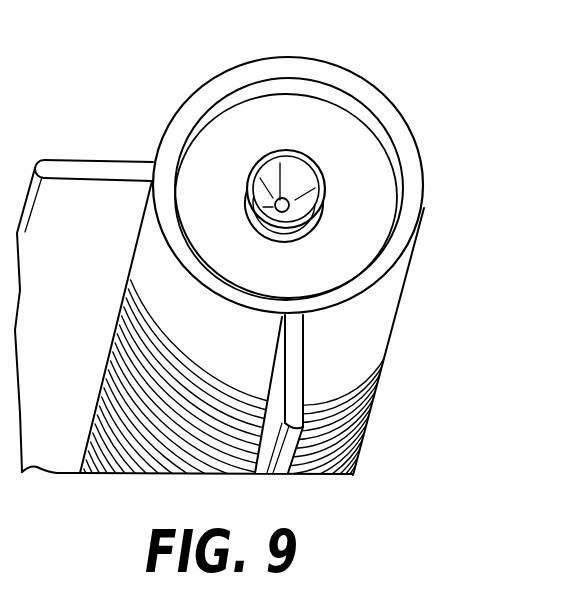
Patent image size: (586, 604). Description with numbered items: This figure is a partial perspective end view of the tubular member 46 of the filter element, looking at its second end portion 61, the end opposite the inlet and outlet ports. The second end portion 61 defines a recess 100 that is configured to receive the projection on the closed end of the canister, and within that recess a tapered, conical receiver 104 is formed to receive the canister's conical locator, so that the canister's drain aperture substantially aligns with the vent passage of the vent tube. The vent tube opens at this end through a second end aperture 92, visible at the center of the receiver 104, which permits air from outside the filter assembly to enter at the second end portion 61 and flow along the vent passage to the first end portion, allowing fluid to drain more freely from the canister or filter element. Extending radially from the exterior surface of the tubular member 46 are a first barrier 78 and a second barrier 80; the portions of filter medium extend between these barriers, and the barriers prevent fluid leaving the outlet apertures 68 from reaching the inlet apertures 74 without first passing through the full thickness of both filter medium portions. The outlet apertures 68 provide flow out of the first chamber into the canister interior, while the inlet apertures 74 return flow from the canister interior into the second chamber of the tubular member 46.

The tubular member 46 is at (470, 135).
The second end portion 61 is at (158, 85).
The outlet aperture 68 is at (380, 383).
The inlet aperture 74 is at (147, 467).
The first barrier 78 is at (63, 167).
The second barrier 80 is at (292, 447).
The second end aperture 92 is at (289, 211).
The recess 100 is at (303, 107).
The receiver 104 is at (308, 154).